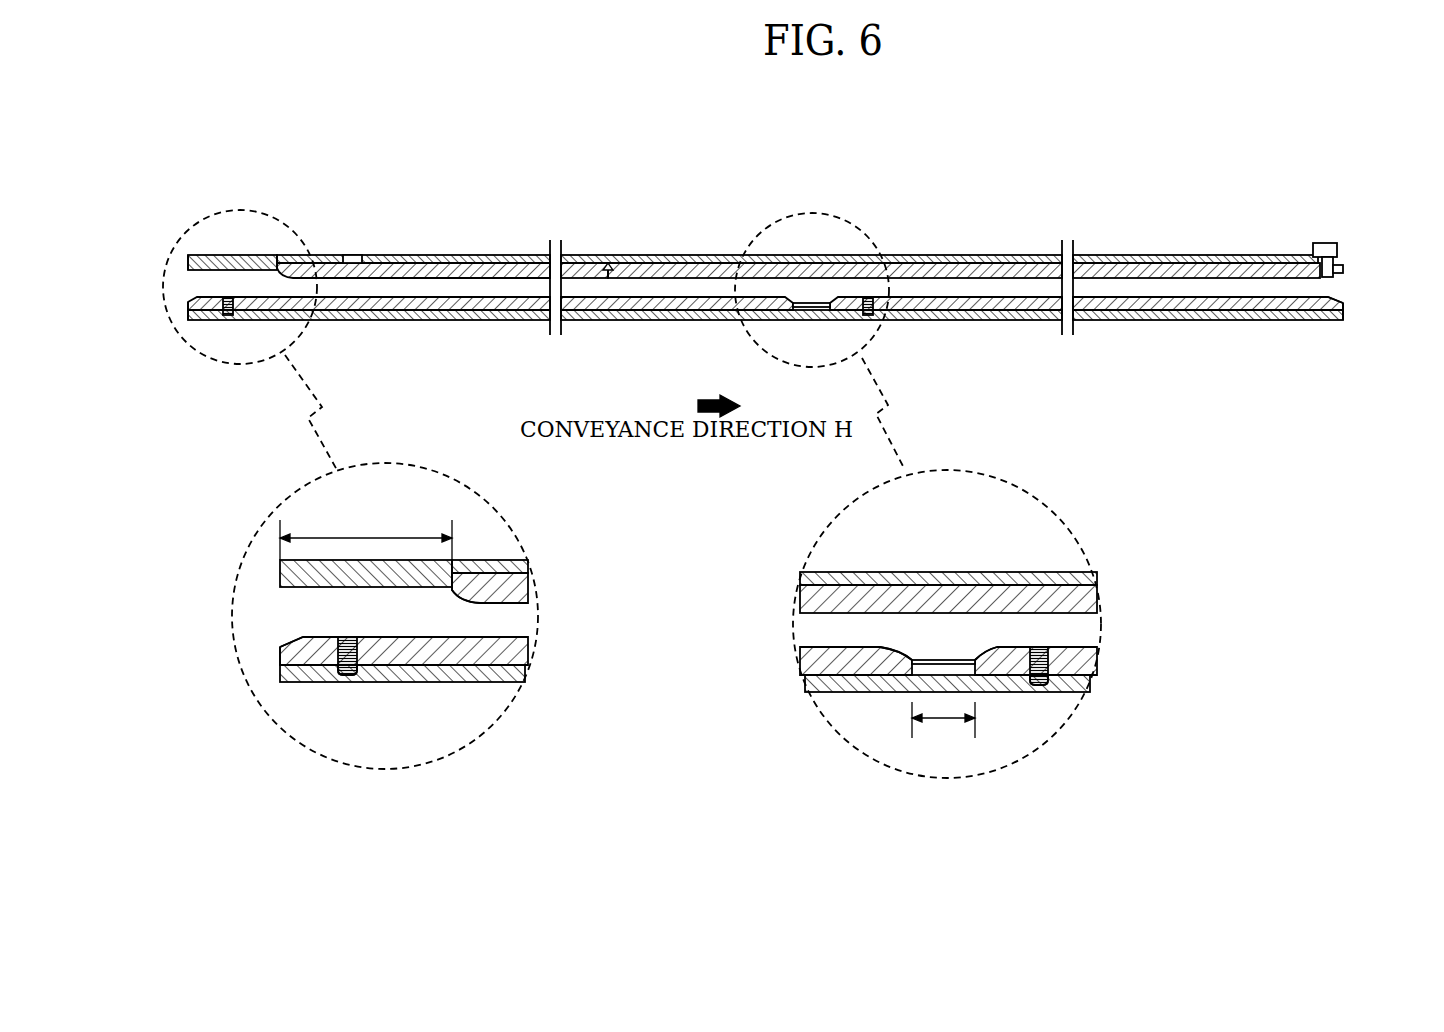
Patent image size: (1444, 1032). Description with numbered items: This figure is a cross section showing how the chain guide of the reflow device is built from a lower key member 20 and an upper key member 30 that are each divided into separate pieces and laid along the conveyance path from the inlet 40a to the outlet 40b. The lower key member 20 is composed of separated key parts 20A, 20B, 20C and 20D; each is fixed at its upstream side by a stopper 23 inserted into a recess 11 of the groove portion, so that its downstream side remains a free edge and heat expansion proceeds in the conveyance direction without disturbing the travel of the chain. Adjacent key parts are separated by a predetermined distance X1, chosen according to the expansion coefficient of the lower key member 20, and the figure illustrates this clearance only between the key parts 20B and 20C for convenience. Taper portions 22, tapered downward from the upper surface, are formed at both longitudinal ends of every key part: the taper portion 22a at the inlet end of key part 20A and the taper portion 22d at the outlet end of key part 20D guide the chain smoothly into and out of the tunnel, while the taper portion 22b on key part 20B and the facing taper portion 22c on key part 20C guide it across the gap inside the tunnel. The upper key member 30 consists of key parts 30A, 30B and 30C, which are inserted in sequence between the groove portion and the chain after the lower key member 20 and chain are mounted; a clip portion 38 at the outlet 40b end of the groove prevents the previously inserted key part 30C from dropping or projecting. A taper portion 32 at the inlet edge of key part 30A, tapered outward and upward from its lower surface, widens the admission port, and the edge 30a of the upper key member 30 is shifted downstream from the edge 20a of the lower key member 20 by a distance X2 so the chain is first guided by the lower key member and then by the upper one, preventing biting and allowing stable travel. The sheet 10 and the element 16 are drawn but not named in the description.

The sheet 10 is at (705, 258).
The recess 11 is at (343, 677).
The opening 16 is at (347, 257).
The lower key member 20 is at (797, 501).
The key part 20A is at (407, 308).
The key part 20B is at (690, 310).
The key part 20C is at (990, 310).
The key part 20D is at (1195, 310).
The edge of the lower key member 20a is at (300, 670).
The taper portion 22 is at (591, 483).
The taper portion 22a is at (303, 640).
The taper portion 22b is at (897, 650).
The taper portion 22c is at (992, 650).
The taper portion 22d is at (1345, 300).
The stopper 23 is at (228, 318).
The upper key member 30 is at (810, 401).
The key part 30A is at (407, 262).
The key part 30B is at (948, 262).
The key part 30C is at (1190, 262).
The edge of the upper key member 30a is at (460, 598).
The taper portion 32 is at (452, 622).
The clip portion 38 is at (1325, 243).
The inlet 40a is at (155, 296).
The outlet 40b is at (1423, 296).
The distance X1 is at (943, 729).
The distance X2 is at (366, 535).